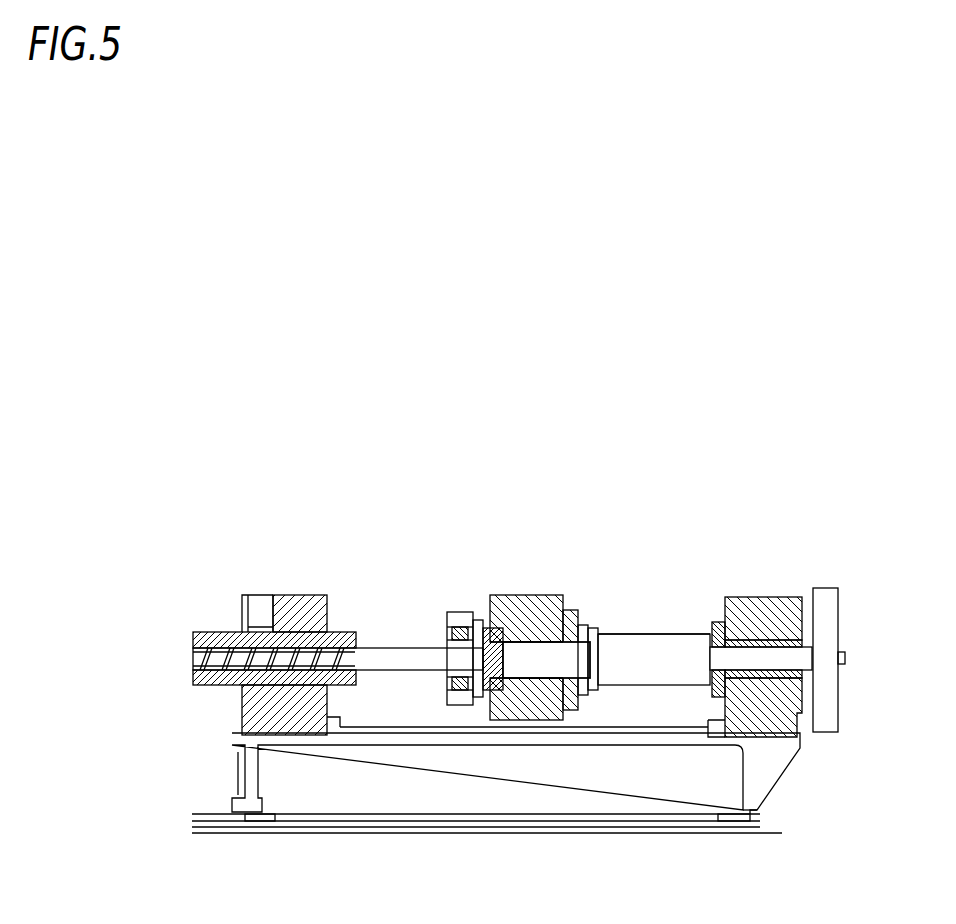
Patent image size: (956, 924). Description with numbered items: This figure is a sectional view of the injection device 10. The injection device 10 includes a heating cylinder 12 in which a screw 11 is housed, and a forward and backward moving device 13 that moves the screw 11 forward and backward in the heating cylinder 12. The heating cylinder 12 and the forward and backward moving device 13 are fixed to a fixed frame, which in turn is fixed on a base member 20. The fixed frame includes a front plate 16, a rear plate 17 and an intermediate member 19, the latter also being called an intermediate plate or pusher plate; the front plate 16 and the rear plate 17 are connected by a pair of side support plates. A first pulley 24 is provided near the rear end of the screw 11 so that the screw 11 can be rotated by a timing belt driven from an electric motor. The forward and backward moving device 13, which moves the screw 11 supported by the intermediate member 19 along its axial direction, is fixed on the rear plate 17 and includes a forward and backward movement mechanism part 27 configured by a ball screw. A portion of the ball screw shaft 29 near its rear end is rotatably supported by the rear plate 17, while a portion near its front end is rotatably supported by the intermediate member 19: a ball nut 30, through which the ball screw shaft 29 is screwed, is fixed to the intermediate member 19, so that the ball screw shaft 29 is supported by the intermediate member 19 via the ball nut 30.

The injection device 10 is at (690, 279).
The screw 11 is at (232, 660).
The heating cylinder 12 is at (203, 640).
The forward and backward moving device 13 is at (734, 491).
The front plate 16 is at (300, 610).
The rear plate 17 is at (757, 610).
The intermediate member 19 is at (520, 718).
The base member 20 is at (765, 770).
The first pulley 24 is at (460, 620).
The forward and backward movement mechanism part 27 is at (718, 552).
The ball screw shaft 29 is at (750, 657).
The ball nut 30 is at (636, 645).